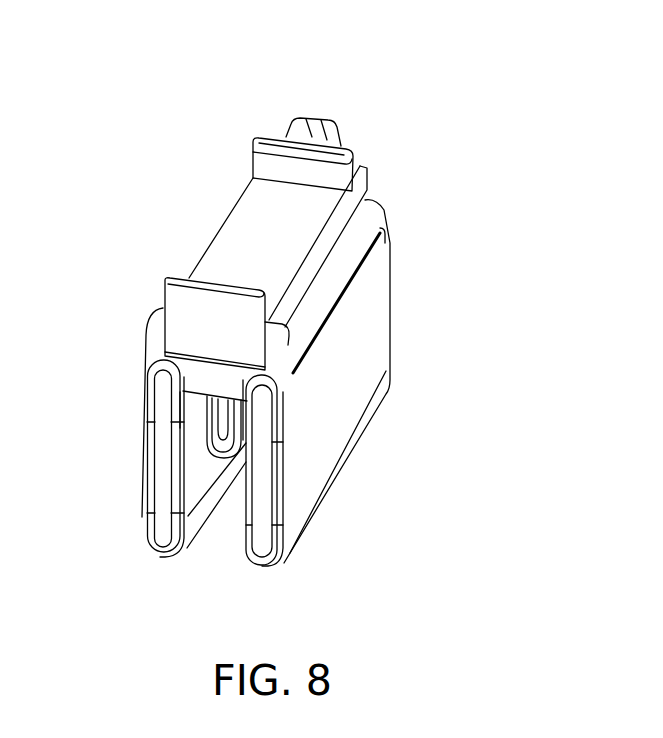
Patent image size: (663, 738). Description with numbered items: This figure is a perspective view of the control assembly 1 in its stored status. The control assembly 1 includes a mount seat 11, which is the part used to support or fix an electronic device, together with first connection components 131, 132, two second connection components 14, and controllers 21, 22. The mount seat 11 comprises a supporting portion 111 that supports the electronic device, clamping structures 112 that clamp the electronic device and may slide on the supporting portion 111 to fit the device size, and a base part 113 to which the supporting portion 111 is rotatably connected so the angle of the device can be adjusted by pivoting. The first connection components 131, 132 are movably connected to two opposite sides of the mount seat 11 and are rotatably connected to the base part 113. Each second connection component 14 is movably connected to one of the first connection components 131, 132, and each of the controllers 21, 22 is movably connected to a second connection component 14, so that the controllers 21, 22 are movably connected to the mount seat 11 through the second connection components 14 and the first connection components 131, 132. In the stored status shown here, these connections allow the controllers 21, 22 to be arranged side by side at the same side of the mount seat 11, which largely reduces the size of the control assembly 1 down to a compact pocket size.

The control assembly 1 is at (114, 35).
The mount seat 11 is at (311, 212).
The supporting portion 111 is at (252, 226).
The clamping structure 112 is at (290, 138).
The base part 113 is at (373, 218).
The second connection component 14 is at (350, 463).
The controller 21 is at (169, 478).
The controller 22 is at (405, 310).
The first connection component 131 is at (163, 495).
The first connection component 132 is at (262, 527).